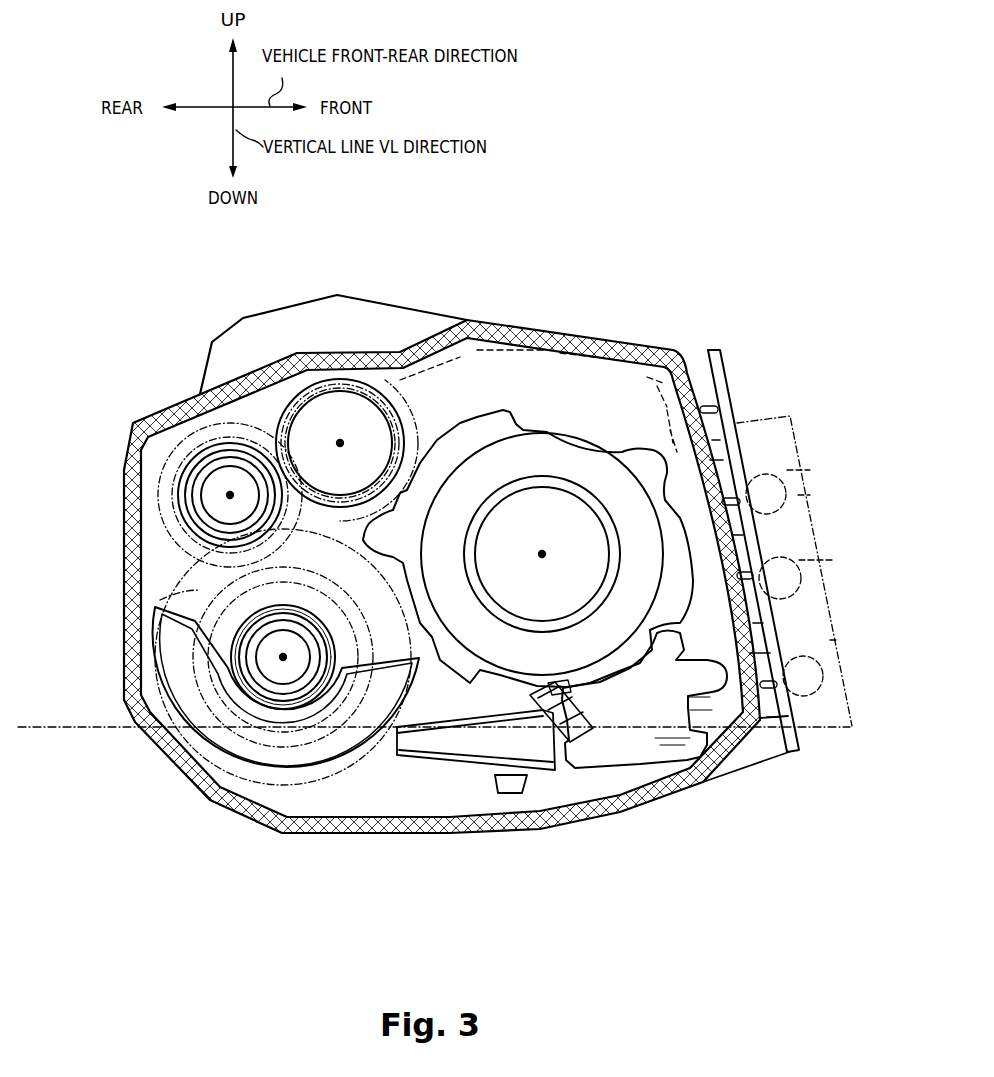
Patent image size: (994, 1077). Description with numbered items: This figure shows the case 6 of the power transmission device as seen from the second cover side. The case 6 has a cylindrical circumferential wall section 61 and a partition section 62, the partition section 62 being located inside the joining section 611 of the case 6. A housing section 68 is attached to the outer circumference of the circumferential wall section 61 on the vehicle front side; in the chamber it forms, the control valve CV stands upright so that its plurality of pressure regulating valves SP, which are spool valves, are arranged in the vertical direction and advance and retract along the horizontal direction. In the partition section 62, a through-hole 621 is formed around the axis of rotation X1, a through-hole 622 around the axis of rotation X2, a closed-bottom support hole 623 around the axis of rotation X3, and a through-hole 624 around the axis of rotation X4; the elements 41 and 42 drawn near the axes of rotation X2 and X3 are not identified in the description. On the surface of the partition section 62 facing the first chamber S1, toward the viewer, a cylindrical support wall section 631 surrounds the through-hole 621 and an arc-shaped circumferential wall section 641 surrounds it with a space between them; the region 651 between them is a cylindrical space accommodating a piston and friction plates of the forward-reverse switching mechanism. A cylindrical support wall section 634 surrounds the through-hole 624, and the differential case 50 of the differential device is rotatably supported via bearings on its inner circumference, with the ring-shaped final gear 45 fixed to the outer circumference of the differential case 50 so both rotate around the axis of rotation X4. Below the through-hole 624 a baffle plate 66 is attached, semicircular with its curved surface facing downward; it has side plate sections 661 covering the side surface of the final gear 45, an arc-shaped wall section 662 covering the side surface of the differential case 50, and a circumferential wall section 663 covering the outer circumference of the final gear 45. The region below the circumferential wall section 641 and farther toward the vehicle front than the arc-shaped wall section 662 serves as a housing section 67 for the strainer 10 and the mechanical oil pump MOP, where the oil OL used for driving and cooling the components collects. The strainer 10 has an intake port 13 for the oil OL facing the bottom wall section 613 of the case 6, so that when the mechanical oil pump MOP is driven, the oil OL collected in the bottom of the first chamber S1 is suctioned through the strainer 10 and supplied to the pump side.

The case 6 is at (713, 288).
The circumferential wall section 61 is at (480, 335).
The partition section 62 is at (534, 375).
The joining section 611 is at (612, 336).
The support hole 623 is at (215, 462).
The driven gear 42 is at (218, 480).
The counter gear 41 is at (397, 418).
The through-hole 622 is at (318, 484).
The circumferential wall section 641 is at (548, 432).
The cylindrical support wall section 631 is at (588, 478).
The region 651 is at (523, 469).
The through-hole 621 is at (523, 527).
The final gear 45 is at (200, 545).
The differential case 50 is at (165, 600).
The through-hole 624 is at (272, 610).
The cylindrical support wall section 634 is at (320, 630).
The baffle plate 66 is at (254, 763).
The side plate sections 661 is at (222, 747).
The arc-shaped wall section 662 is at (250, 807).
The circumferential wall section 663 is at (163, 753).
The housing section 67 is at (392, 798).
The strainer 10 is at (450, 770).
The bottom wall section 613 is at (490, 815).
The intake port 13 is at (515, 786).
The housing section 68 is at (797, 757).
The axis of rotation X1 is at (541, 557).
The axis of rotation X2 is at (340, 440).
The axis of rotation X3 is at (228, 496).
The axis of rotation X4 is at (283, 654).
The first chamber S1 is at (470, 392).
The control valve CV is at (790, 414).
The pressure regulating valves SP is at (807, 574).
The oil OL is at (583, 683).
The mechanical oil pump MOP is at (644, 700).